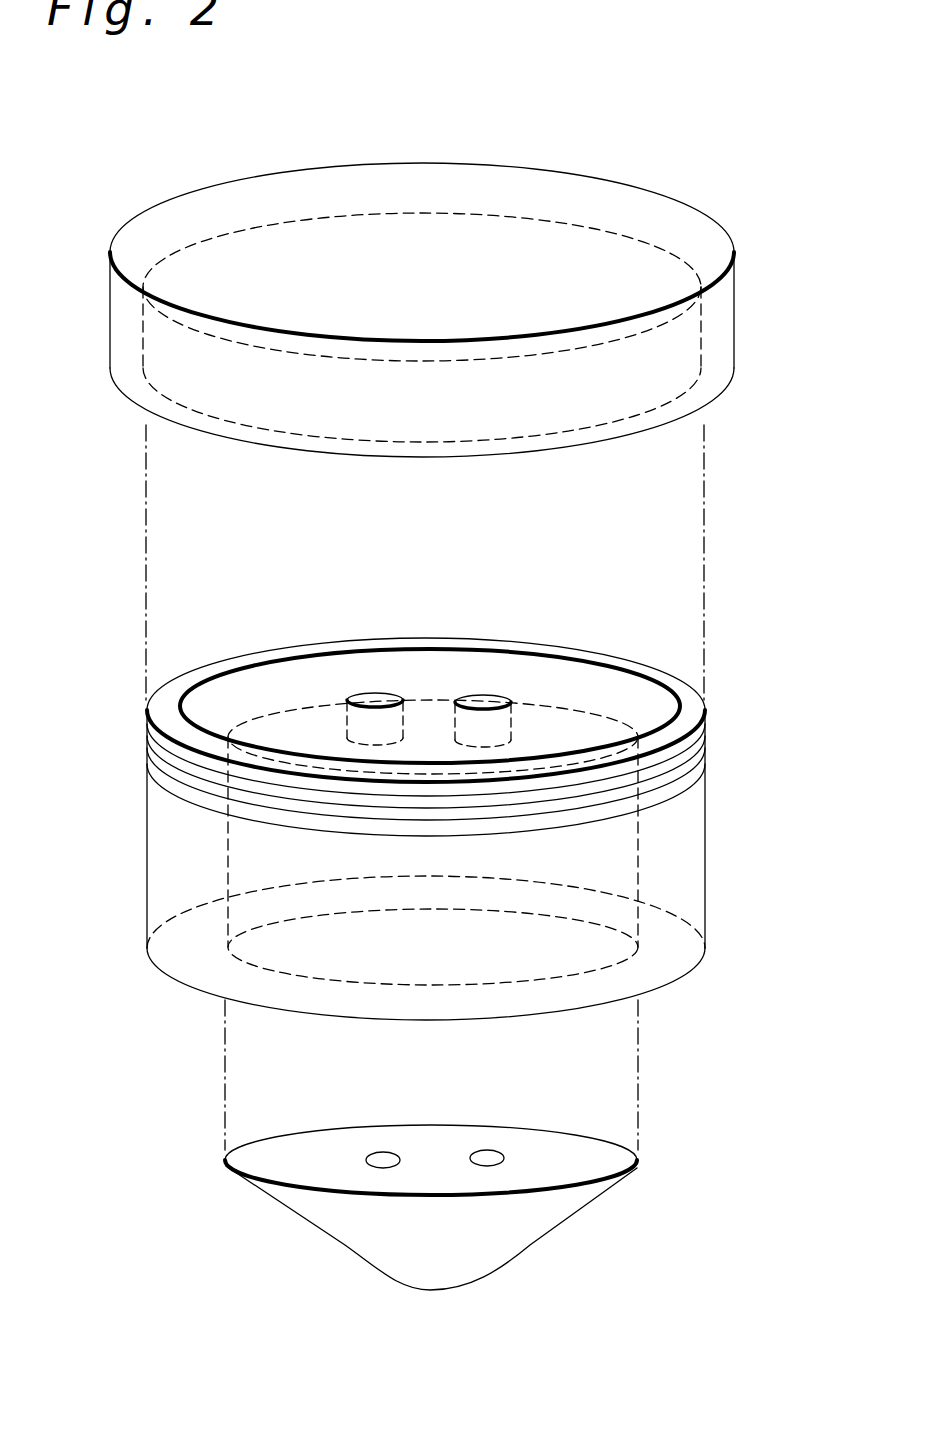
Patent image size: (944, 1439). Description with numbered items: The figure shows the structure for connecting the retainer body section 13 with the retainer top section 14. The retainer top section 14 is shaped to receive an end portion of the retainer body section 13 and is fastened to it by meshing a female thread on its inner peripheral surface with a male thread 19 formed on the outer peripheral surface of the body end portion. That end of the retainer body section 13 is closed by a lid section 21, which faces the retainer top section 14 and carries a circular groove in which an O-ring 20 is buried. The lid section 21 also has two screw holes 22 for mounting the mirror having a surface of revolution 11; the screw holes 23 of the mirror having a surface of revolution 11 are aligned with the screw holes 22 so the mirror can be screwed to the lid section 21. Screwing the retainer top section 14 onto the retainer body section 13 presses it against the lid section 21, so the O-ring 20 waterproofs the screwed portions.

The mirror having a surface of revolution 11 is at (563, 1230).
The retainer body section 13 is at (707, 850).
The retainer top section 14 is at (735, 309).
The male thread 19 is at (685, 770).
The O-ring 20 is at (617, 672).
The lid section 21 is at (535, 675).
The screw holes 22 is at (370, 693).
The screw holes 23 is at (382, 1155).